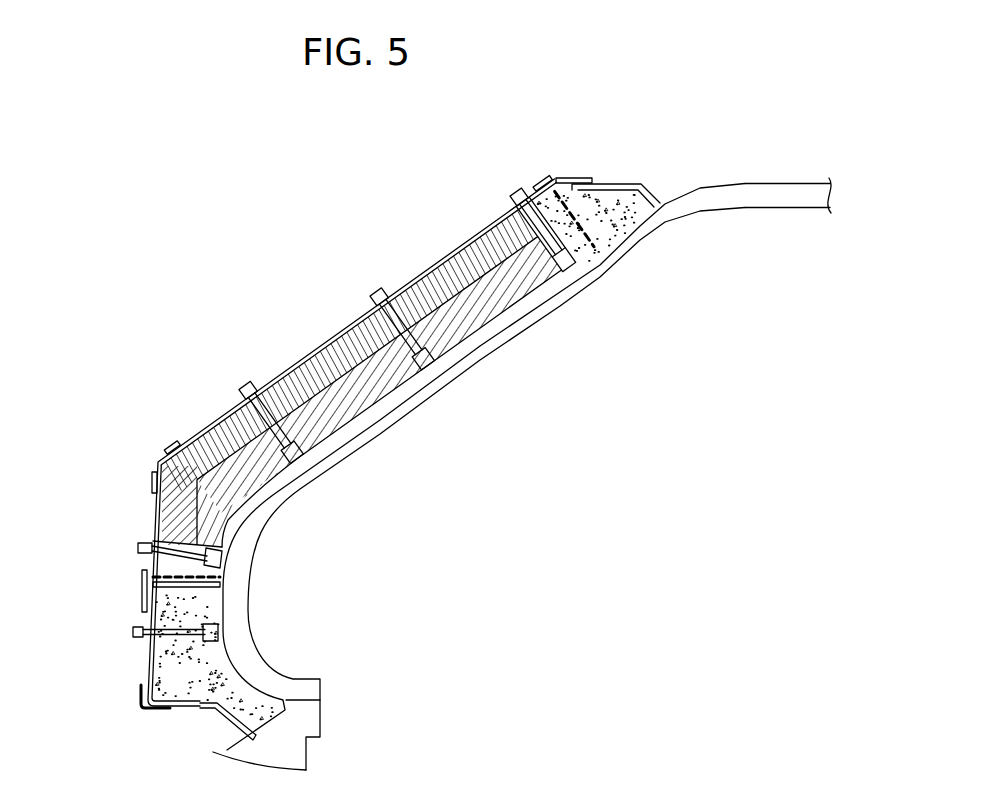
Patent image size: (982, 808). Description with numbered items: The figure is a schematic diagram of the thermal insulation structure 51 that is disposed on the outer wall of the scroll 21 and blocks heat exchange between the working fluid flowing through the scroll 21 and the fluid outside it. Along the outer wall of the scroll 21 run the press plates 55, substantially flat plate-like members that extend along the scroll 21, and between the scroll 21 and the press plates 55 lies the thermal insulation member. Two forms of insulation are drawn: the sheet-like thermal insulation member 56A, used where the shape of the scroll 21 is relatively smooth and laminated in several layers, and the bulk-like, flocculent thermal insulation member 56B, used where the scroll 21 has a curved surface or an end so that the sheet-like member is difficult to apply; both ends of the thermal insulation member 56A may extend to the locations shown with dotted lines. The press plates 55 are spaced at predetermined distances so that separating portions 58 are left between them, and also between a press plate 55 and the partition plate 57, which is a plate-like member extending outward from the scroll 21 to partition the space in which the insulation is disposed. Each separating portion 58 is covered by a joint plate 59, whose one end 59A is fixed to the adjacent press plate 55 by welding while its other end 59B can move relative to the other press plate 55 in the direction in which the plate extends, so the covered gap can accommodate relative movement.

The scroll 21 is at (761, 208).
The thermal insulation structure 51 is at (266, 206).
The press plate 55 is at (318, 352).
The sheet-like thermal insulation member 56A is at (432, 289).
The bulk-like thermal insulation member 56B is at (620, 215).
The partition plate 57 is at (640, 183).
The separating portion 58 is at (563, 186).
The joint plate 59 is at (556, 181).
The one end of joint plate 59A is at (543, 189).
The other end of joint plate 59B is at (585, 179).